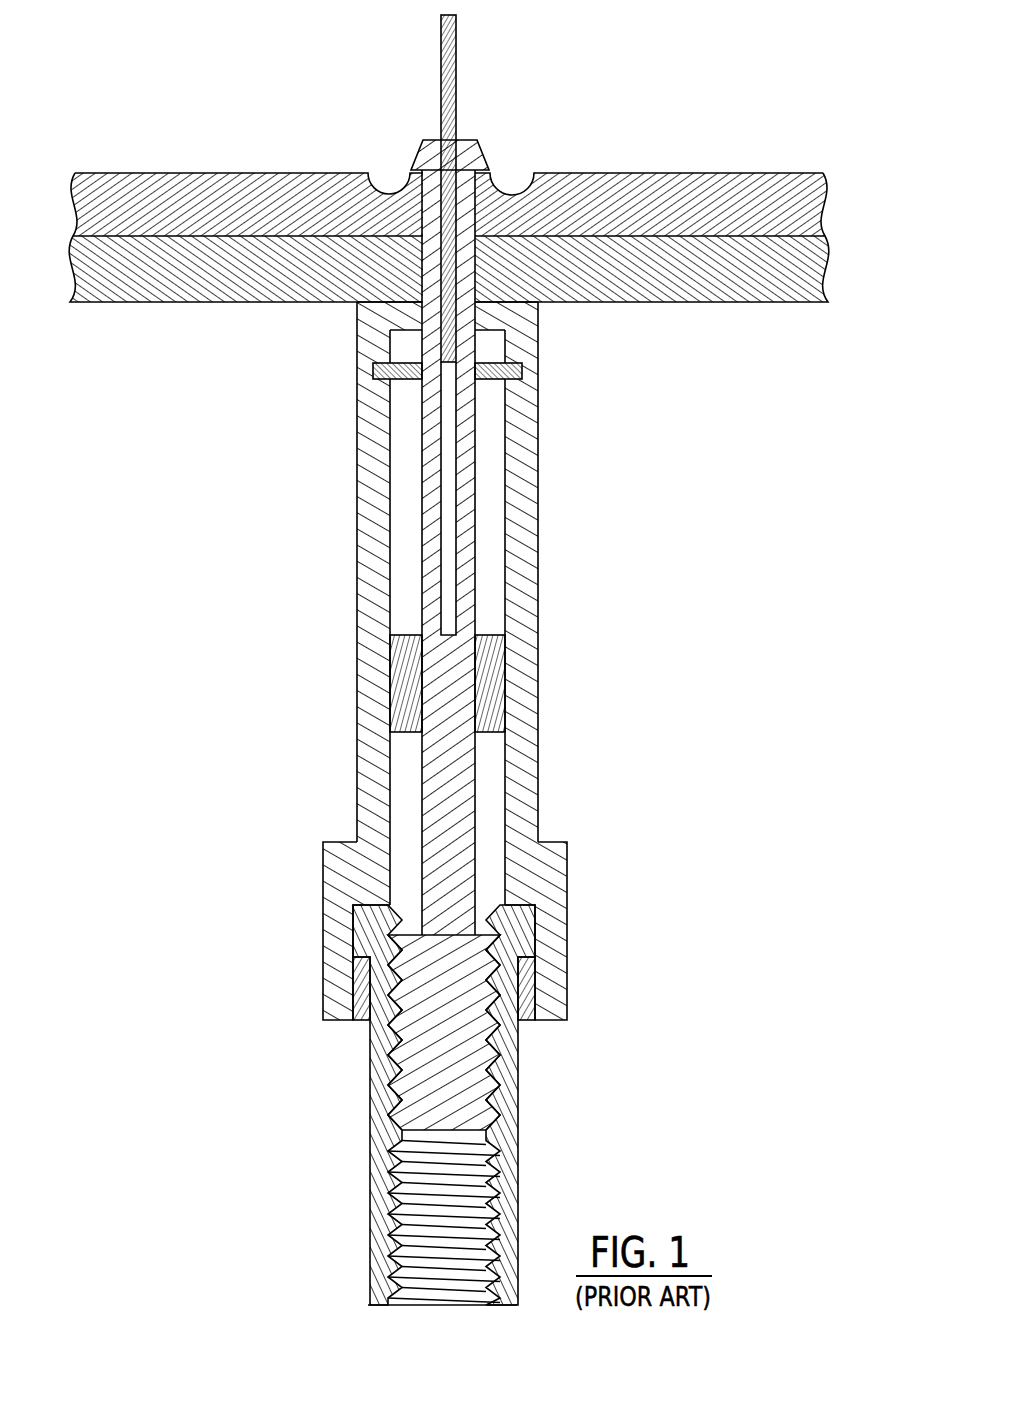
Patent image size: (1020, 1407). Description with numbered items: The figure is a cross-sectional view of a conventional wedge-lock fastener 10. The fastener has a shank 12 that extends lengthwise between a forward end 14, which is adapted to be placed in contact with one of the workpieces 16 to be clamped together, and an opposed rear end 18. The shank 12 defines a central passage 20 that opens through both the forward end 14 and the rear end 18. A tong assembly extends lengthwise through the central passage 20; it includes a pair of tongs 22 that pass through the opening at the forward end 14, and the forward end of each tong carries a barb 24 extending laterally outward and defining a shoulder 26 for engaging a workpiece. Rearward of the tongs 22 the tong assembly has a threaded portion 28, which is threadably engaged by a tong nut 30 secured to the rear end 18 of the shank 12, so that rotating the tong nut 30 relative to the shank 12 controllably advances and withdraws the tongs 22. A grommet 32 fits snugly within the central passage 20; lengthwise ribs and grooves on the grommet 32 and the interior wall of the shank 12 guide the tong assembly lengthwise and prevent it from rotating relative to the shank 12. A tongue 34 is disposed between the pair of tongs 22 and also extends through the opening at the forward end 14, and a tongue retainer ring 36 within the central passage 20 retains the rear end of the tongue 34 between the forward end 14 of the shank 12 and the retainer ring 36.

The wedge-lock fastener 10 is at (506, 658).
The shank 12 is at (530, 555).
The forward end 14 is at (510, 300).
The workpieces 16 is at (97, 290).
The rear end 18 is at (548, 1020).
The central passage 20 is at (486, 503).
The tongs 22 is at (467, 258).
The barb 24 is at (420, 145).
The shoulder 26 is at (378, 190).
The threaded portion 28 is at (455, 1078).
The tong nut 30 is at (505, 1207).
The grommet 32 is at (490, 720).
The tongue 34 is at (455, 52).
The tongue retainer ring 36 is at (390, 373).